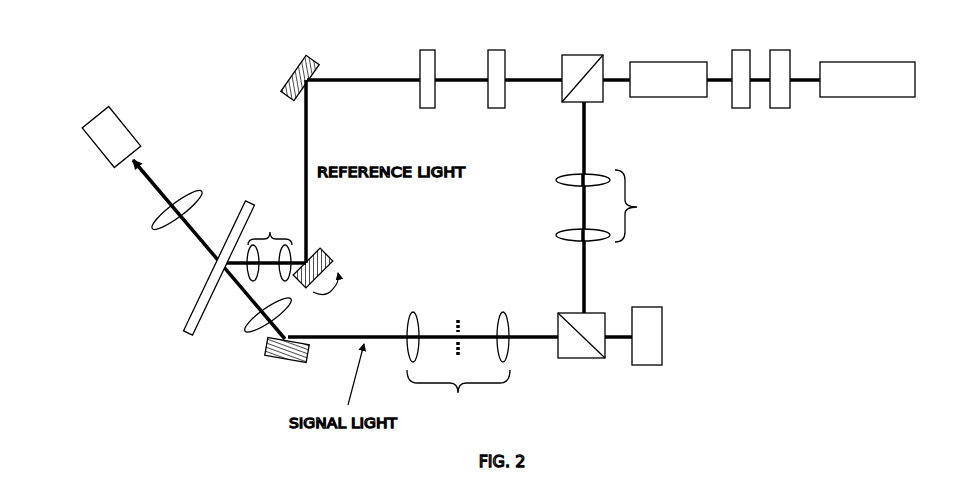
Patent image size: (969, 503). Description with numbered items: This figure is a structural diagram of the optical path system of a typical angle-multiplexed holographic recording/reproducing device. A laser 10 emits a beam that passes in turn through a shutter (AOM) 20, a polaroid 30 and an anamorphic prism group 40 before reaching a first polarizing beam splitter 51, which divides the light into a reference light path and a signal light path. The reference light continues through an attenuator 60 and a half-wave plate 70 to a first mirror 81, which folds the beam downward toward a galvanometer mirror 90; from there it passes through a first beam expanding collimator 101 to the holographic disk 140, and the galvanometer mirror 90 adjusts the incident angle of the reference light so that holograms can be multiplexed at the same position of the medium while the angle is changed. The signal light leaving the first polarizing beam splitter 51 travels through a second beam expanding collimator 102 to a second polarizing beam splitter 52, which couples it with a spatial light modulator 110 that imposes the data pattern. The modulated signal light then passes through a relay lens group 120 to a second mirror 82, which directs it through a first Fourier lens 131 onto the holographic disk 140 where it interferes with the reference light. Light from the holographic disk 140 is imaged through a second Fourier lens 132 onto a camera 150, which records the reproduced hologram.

The laser 10 is at (867, 63).
The shutter (AOM) 20 is at (780, 69).
The polaroid 30 is at (741, 69).
The anamorphic prism group 40 is at (668, 63).
The first polarizing beam splitter 51 is at (582, 66).
The second polarizing beam splitter 52 is at (581, 352).
The attenuator 60 is at (496, 69).
The half-wave plate 70 is at (428, 69).
The first mirror 81 is at (300, 65).
The second mirror 82 is at (287, 363).
The galvanometer mirror 90 is at (325, 271).
The first beam expanding collimator 101 is at (269, 244).
The second beam expanding collimator 102 is at (618, 206).
The spatial light modulator 110 is at (647, 349).
The relay lens group 120 is at (458, 369).
The first Fourier lens 131 is at (253, 326).
The second Fourier lens 132 is at (160, 218).
The holographic disk 140 is at (226, 252).
The camera 150 is at (111, 127).